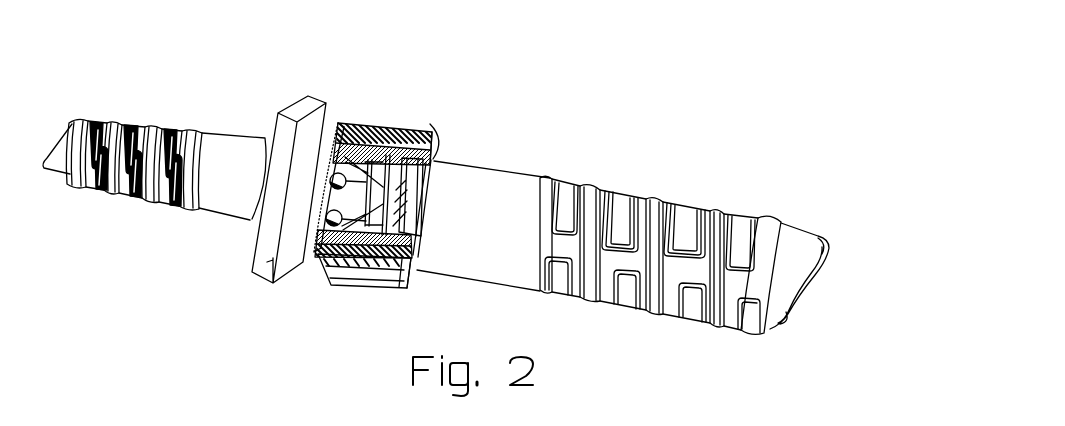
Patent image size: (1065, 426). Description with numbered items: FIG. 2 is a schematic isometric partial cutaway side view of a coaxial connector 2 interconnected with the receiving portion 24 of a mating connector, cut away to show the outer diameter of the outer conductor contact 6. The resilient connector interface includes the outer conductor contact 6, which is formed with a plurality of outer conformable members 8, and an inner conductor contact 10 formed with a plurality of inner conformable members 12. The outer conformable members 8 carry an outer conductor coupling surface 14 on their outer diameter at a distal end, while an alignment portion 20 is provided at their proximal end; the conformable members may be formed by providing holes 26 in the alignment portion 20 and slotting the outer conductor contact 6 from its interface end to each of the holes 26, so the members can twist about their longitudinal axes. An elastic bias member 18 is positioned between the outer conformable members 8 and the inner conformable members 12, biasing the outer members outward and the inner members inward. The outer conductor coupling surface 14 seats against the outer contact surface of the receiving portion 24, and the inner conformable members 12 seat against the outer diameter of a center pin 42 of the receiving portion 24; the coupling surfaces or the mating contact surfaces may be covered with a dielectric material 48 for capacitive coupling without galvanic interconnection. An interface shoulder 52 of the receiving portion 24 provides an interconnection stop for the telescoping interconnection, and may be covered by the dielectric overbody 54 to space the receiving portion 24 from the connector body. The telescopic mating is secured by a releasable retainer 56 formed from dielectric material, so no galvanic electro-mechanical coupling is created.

The coaxial connector 2 is at (278, 143).
The outer conductor contact 6 is at (431, 126).
The outer conformable members 8 is at (431, 126).
The inner conductor contact 10 is at (290, 152).
The inner conformable members 12 is at (338, 123).
The outer conductor coupling surface 14 is at (431, 126).
The elastic bias member 18 is at (434, 142).
The alignment portion 20 is at (331, 190).
The receiving portion 24 is at (433, 158).
The holes 26 is at (318, 258).
The center pin 42 is at (413, 211).
The dielectric material 48 is at (393, 131).
The interface shoulder 52 is at (400, 270).
The overbody 54 is at (532, 188).
The releasable retainer 56 is at (370, 276).